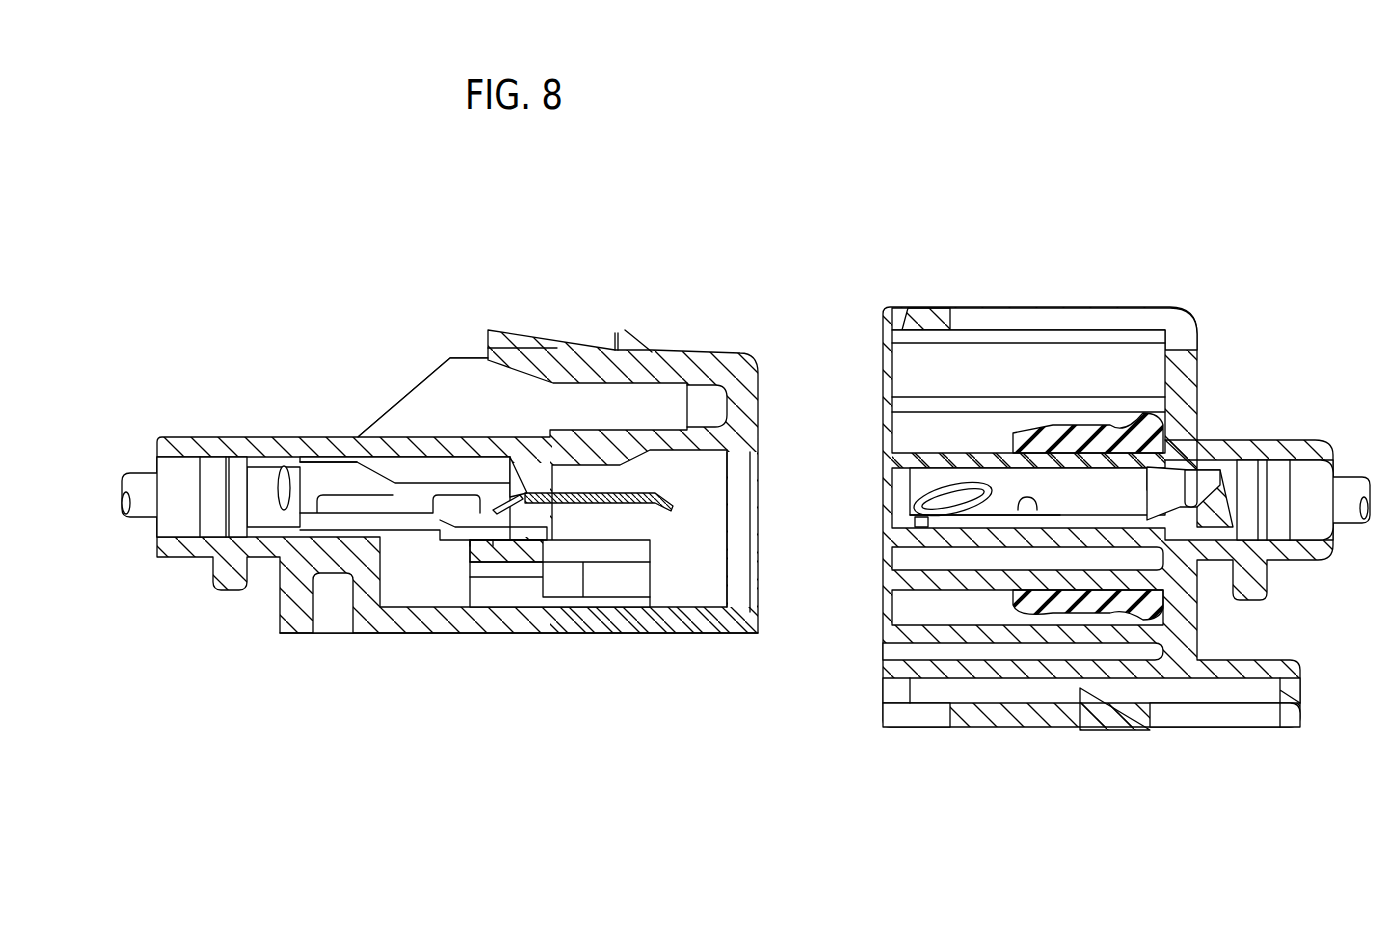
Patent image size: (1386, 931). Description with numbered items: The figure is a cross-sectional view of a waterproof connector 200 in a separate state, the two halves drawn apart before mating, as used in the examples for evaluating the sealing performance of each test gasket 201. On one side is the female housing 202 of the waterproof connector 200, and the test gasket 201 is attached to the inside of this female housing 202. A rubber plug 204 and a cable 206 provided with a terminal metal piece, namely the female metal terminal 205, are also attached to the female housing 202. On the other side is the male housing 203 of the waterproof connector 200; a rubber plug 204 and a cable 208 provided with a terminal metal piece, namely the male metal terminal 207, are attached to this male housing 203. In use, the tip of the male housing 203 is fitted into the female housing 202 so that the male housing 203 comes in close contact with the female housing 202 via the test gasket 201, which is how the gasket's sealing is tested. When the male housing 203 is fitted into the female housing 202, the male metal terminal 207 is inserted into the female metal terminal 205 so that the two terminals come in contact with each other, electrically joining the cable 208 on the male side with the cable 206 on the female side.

The waterproof connector 200 is at (723, 192).
The test gasket 201 is at (1050, 425).
The female housing 202 is at (873, 285).
The male housing 203 is at (722, 297).
The rubber plug 204 is at (186, 510).
The female metal terminal 205 is at (1050, 490).
The cable 206 is at (1350, 525).
The male metal terminal 207 is at (578, 505).
The cable 208 is at (142, 518).